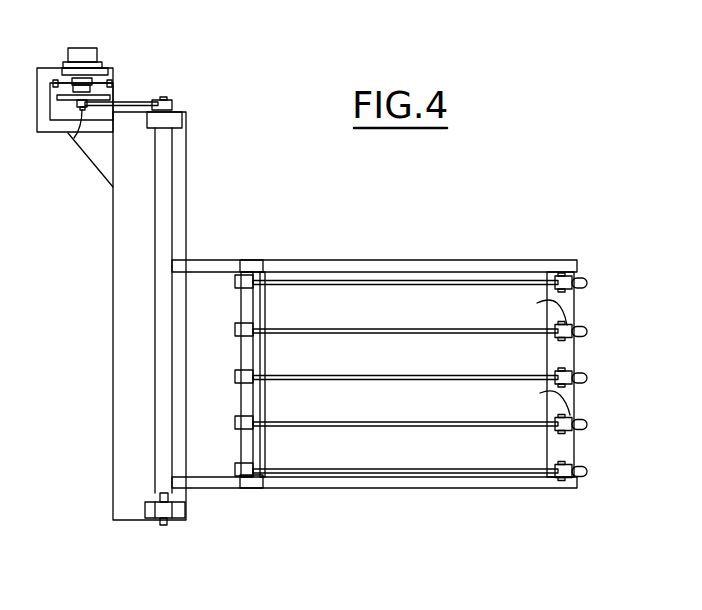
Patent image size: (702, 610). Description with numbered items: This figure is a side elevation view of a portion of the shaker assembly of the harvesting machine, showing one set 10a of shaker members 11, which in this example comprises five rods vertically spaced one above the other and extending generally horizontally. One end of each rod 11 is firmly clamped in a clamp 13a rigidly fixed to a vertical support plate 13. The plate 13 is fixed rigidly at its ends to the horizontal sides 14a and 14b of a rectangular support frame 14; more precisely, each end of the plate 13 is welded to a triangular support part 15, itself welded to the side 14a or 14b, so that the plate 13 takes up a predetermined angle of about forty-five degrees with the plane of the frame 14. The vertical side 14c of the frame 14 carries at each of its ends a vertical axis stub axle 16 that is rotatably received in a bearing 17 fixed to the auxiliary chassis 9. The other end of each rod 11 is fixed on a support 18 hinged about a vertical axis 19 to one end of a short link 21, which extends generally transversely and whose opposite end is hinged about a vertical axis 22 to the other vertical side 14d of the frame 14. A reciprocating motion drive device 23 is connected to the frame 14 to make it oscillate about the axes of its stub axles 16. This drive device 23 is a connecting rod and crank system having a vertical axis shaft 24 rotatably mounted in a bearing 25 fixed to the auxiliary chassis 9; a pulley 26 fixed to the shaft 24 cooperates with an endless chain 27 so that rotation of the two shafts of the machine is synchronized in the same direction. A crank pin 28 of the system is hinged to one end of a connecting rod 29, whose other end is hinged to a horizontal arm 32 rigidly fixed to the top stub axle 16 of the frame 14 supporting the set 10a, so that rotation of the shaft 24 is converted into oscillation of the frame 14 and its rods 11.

The auxiliary chassis 9 is at (112, 200).
The set of shaker members 10a is at (445, 228).
The shaker member 11 is at (437, 286).
The vertical support plate 13 is at (239, 352).
The clamp 13a is at (236, 286).
The rectangular support frame 14 is at (410, 365).
The horizontal side of frame 14a is at (460, 259).
The horizontal side of frame 14b is at (390, 488).
The vertical side of frame 14c is at (165, 347).
The vertical side of frame 14d is at (567, 352).
The support part 15 is at (252, 258).
The stub axle 16 is at (167, 133).
The bearing 17 is at (162, 126).
The support 18 is at (597, 312).
The vertical axis 19 is at (582, 277).
The short link 21 is at (564, 276).
The vertical axis 22 is at (538, 303).
The reciprocating motion drive device 23 is at (148, 82).
The vertical axis shaft 24 is at (72, 82).
The bearing 25 is at (80, 50).
The pulley 26 is at (97, 80).
The endless chain 27 is at (112, 85).
The crank pin 28 is at (78, 134).
The connecting rod 29 is at (137, 100).
The horizontal arm 32 is at (170, 103).